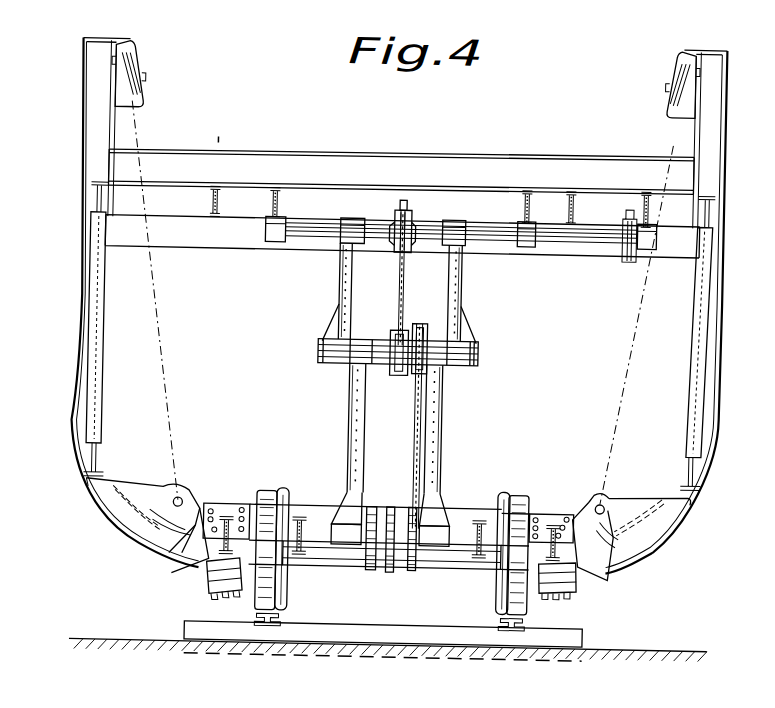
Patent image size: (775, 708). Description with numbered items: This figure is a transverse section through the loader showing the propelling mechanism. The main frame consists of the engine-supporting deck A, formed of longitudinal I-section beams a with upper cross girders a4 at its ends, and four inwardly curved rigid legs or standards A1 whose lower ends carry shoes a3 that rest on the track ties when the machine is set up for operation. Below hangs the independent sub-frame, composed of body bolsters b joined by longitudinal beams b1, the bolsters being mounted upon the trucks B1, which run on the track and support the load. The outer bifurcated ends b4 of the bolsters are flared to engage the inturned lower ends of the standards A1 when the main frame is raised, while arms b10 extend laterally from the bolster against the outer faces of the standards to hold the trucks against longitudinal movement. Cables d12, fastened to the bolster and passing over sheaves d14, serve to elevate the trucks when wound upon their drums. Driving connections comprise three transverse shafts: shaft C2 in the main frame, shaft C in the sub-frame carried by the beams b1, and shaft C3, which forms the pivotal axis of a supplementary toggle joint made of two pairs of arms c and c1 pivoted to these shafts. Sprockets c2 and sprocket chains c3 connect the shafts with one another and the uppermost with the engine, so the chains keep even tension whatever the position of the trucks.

The sheaves d14 is at (138, 95).
The cables d12 is at (188, 362).
The upper cross girders a4 is at (401, 171).
The engine-supporting platform or deck A is at (401, 186).
The longitudinally extending beams a is at (92, 198).
The inwardly curved rigid legs or standards A1 is at (84, 356).
The transverse shaft C2 is at (556, 246).
The sprockets c2 is at (405, 206).
The sprocket chains c3 is at (627, 218).
The arms or links c is at (336, 294).
The transverse shaft C3 is at (480, 352).
The arms or links c1 is at (348, 427).
The trucks B1 is at (388, 554).
The longitudinal beams b1 is at (299, 557).
The transverse shaft C is at (317, 534).
The body bolsters b is at (462, 524).
The arms b10 is at (101, 504).
The outer bifurcated ends b4 is at (160, 568).
The shoes a3 is at (216, 598).